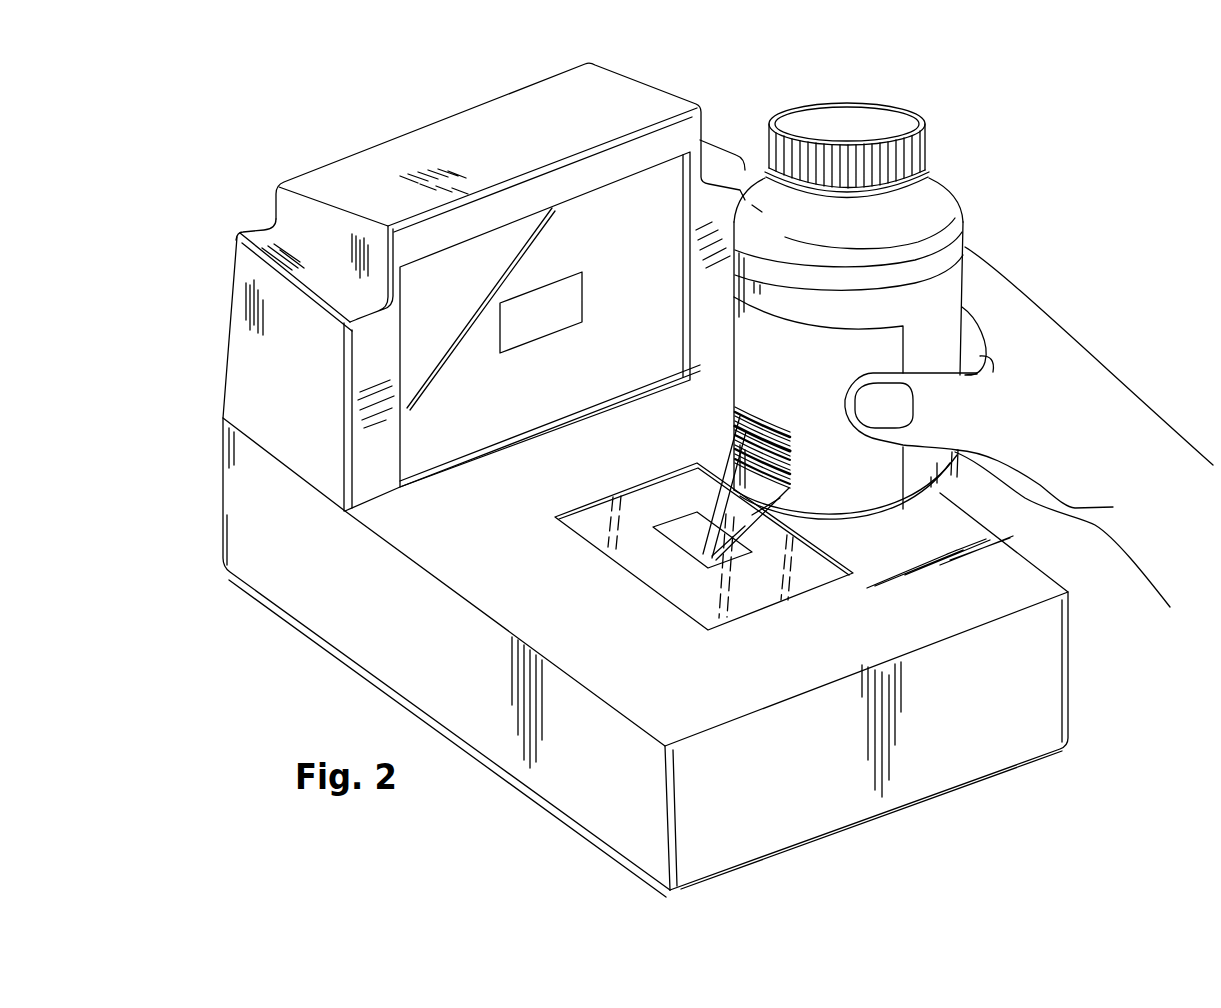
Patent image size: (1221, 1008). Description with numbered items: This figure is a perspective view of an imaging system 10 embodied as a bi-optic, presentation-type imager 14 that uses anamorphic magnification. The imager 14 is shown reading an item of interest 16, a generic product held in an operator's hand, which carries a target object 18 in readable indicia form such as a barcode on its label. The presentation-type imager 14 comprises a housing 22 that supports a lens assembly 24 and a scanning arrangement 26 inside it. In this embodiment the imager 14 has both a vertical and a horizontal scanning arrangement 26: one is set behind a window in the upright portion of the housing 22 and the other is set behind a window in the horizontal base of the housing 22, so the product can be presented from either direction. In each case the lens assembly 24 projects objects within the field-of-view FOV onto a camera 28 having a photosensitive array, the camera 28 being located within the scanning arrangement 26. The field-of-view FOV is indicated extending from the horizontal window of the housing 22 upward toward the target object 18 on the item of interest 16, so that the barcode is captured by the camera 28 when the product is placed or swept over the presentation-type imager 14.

The imaging system 10 is at (1020, 186).
The presentation-type imager 14 is at (334, 120).
The item of interest 16 is at (754, 338).
The target object 18 is at (734, 445).
The housing 22 is at (353, 181).
The lens assembly 24 is at (480, 319).
The scanning arrangement 26 is at (487, 357).
The camera 28 is at (520, 325).
The field-of-view FOV is at (752, 530).